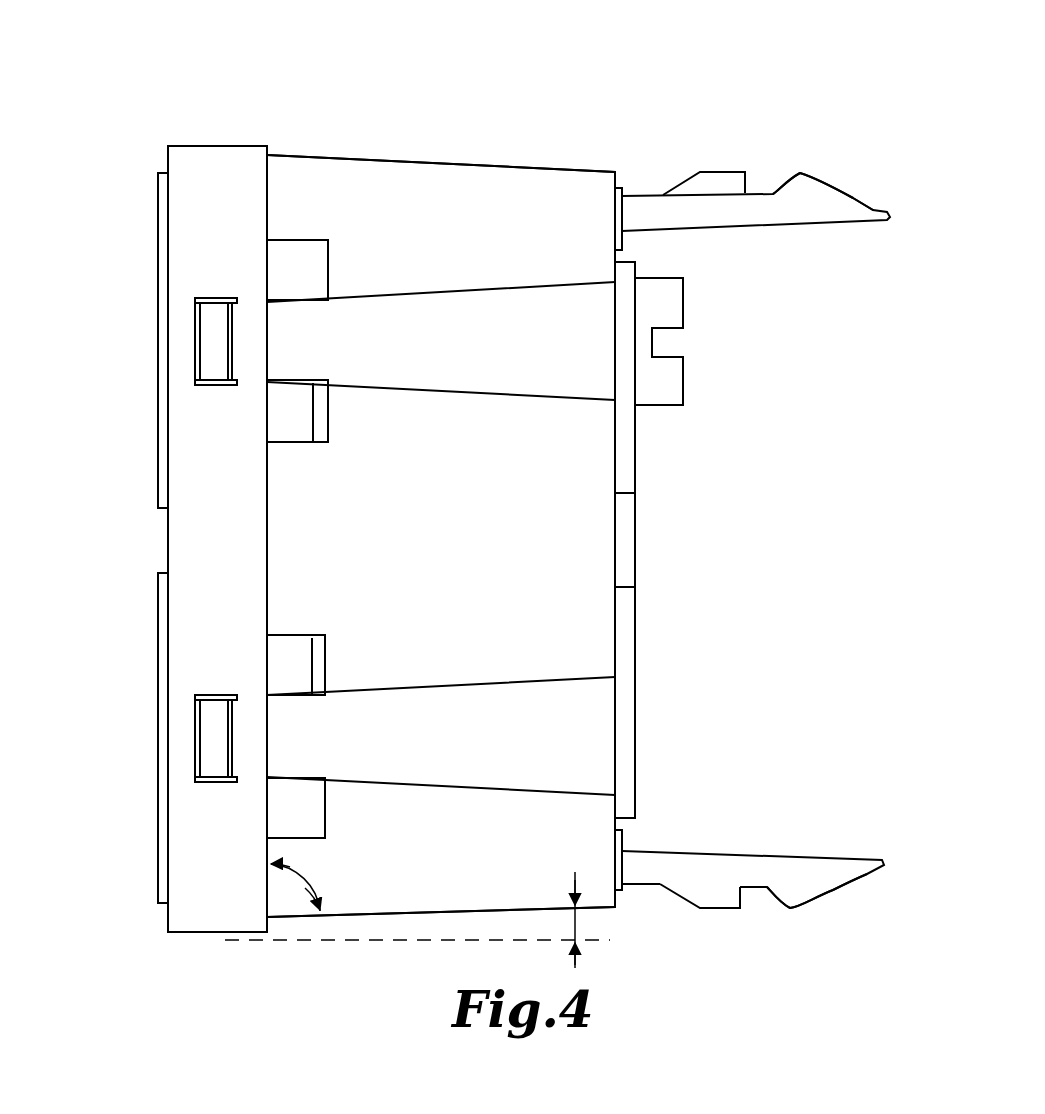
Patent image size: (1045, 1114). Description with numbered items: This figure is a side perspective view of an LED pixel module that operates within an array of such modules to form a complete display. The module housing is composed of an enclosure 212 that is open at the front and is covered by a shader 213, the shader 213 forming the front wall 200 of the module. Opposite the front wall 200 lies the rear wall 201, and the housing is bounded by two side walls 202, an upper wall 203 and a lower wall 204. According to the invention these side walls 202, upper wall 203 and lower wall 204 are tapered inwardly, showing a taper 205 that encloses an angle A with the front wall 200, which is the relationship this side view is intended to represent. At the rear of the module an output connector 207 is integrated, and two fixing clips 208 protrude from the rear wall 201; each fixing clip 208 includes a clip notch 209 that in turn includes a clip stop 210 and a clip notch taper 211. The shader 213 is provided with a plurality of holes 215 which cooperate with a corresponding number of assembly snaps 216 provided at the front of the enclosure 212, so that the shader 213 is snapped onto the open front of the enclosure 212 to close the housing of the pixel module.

The front wall 200 is at (152, 667).
The rear wall 201 is at (643, 612).
The side walls 202 is at (558, 549).
The upper wall 203 is at (377, 157).
The lower wall 204 is at (373, 926).
The taper 205 is at (577, 937).
The output connector 207 is at (626, 458).
The fixing clips 208 is at (817, 190).
The clip notch 209 is at (760, 186).
The clip stop 210 is at (752, 180).
The clip notch taper 211 is at (783, 188).
The enclosure 212 is at (487, 197).
The shader 213 is at (202, 147).
The holes 215 is at (202, 386).
The assembly snaps 216 is at (280, 338).
The angle A is at (290, 882).